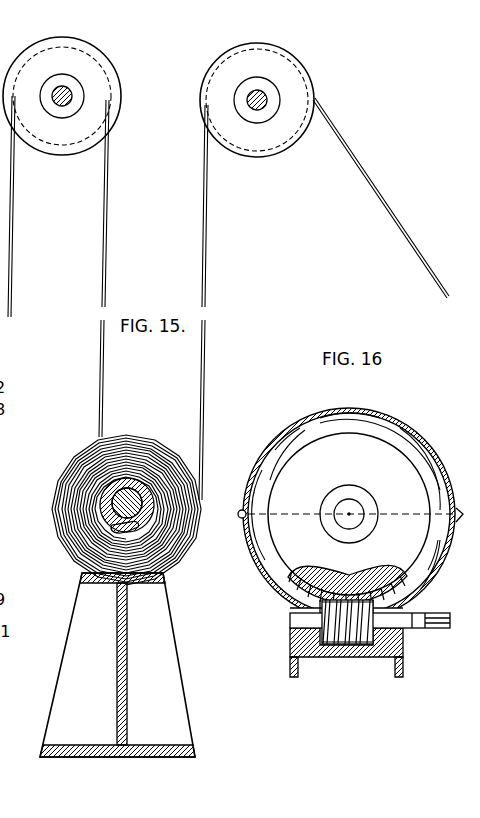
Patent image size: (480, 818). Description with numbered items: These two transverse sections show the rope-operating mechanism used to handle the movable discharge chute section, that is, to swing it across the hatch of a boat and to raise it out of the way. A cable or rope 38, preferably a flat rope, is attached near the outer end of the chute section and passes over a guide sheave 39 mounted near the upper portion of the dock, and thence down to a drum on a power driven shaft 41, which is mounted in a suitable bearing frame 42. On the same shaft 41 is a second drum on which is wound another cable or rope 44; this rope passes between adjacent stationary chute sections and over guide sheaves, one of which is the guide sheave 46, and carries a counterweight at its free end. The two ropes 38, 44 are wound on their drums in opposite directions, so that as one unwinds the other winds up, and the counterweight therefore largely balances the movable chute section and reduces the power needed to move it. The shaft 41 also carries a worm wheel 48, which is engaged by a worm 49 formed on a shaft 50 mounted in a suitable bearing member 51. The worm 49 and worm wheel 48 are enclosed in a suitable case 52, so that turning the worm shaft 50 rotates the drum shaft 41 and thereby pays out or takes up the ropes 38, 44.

In FIG. 15, the cable or rope 38 is at (207, 247).
In FIG. 15, the guide sheave 39 is at (303, 78).
In FIG. 16, the power driven shaft 41 is at (358, 506).
In FIG. 15, the bearing frame 42 is at (117, 665).
In FIG. 15, the cable or rope 44 is at (102, 265).
In FIG. 15, the guide sheave 46 is at (106, 72).
In FIG. 16, the worm wheel 48 is at (351, 509).
In FIG. 16, the worm 49 is at (353, 641).
In FIG. 16, the shaft 50 is at (410, 629).
In FIG. 16, the bearing member 51 is at (290, 643).
In FIG. 16, the case 52 is at (262, 571).